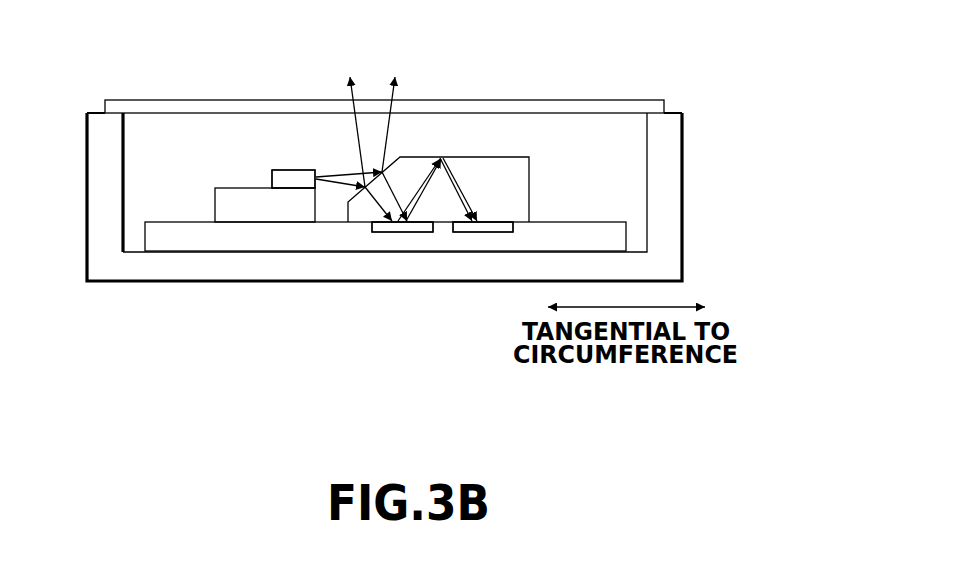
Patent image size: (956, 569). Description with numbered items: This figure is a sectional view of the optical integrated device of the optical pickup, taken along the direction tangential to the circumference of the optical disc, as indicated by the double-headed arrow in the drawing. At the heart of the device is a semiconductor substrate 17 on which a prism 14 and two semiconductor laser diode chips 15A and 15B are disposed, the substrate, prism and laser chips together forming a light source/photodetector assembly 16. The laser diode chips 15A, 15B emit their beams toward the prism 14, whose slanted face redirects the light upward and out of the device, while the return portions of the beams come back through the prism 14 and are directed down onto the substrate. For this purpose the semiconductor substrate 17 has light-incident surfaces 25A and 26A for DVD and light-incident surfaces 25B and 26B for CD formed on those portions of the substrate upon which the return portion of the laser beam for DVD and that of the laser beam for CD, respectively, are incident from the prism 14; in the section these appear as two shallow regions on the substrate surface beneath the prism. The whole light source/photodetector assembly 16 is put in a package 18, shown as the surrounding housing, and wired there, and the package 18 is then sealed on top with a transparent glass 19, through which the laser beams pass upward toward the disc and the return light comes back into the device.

The prism 14 is at (500, 170).
The semiconductor laser diode chip 15A is at (288, 170).
The semiconductor laser diode chip 15B is at (265, 196).
The light source/photodetector assembly 16 is at (587, 123).
The semiconductor substrate 17 is at (168, 233).
The package 18 is at (256, 265).
The transparent glass 19 is at (148, 108).
The light-incident surface for DVD 25A is at (407, 227).
The light-incident surface for CD 25B is at (402, 227).
The light-incident surface for DVD 26A is at (480, 227).
The light-incident surface for CD 26B is at (483, 227).